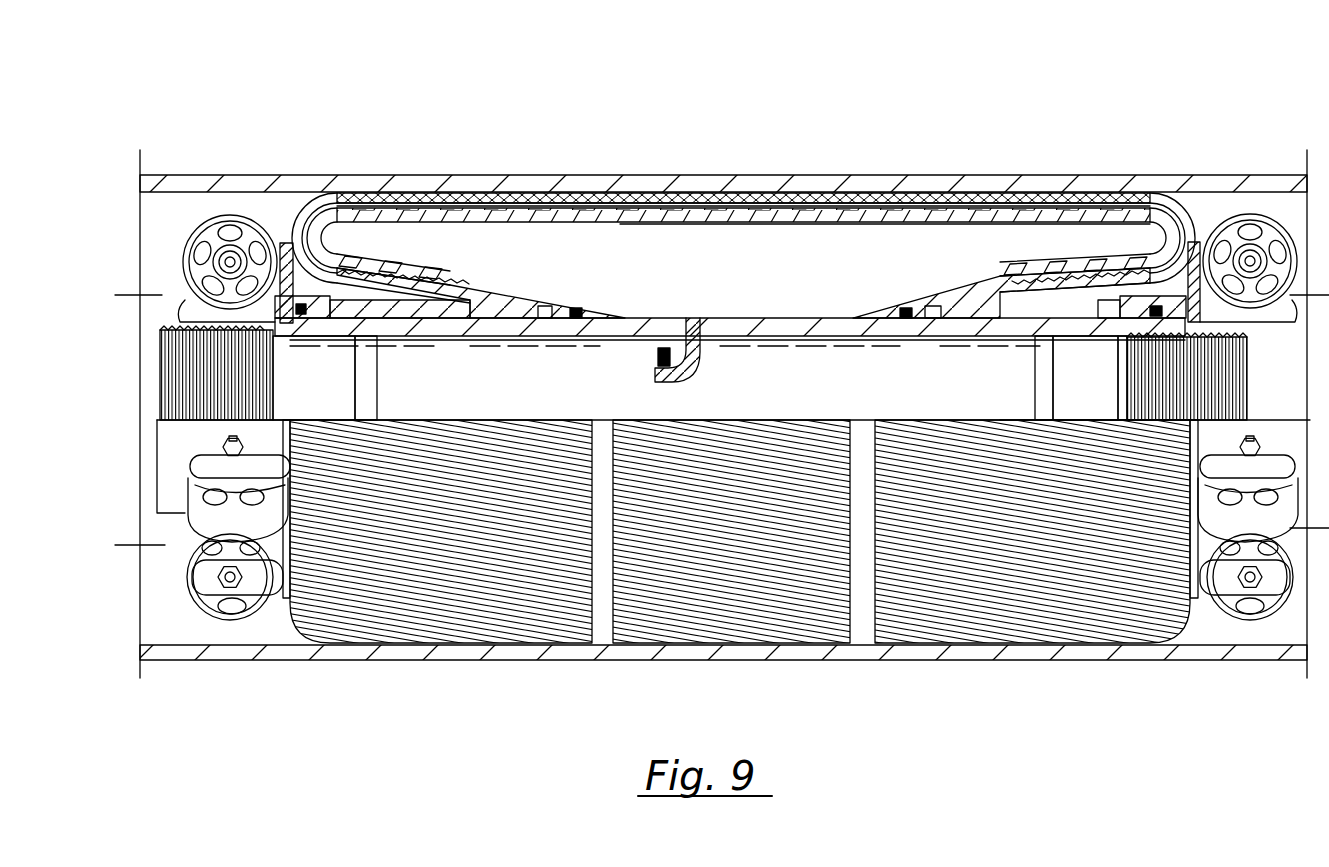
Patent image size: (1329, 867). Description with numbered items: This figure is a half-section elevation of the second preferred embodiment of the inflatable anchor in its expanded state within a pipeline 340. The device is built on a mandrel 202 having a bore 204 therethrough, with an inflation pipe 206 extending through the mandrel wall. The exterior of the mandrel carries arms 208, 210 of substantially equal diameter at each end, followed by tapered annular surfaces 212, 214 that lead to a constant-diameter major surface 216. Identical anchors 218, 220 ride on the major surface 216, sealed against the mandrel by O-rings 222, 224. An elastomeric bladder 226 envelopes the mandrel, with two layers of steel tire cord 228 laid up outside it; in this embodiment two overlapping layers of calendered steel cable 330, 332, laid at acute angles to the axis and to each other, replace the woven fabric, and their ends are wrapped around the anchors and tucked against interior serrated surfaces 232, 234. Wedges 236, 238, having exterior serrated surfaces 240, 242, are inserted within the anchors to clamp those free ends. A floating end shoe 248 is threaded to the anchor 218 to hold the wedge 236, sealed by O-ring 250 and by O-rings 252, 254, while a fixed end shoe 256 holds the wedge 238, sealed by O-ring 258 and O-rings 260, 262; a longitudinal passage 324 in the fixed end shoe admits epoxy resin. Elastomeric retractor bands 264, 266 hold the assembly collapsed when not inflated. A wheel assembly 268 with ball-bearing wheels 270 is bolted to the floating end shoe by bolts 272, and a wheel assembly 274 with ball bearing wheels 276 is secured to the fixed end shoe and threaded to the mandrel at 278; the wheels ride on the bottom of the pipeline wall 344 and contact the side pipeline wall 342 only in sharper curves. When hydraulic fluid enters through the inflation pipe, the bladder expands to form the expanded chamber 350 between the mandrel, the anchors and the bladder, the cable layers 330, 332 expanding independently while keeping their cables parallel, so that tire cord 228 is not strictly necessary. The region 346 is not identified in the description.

The mandrel 202 is at (650, 326).
The bore 204 is at (1060, 398).
The inflation pipe 206 is at (705, 355).
The arm 208 is at (185, 320).
The arm 210 is at (1140, 345).
The tapered annular surface 212 is at (300, 340).
The tapered annular surface 214 is at (1105, 340).
The major surface 216 is at (770, 320).
The anchor 218 is at (500, 296).
The anchor 220 is at (990, 288).
The O-ring 222 is at (578, 308).
The O-ring 224 is at (905, 308).
The elastomeric bladder 226 is at (512, 200).
The steel tire cord 228 is at (738, 213).
The interior serrated surface 232 is at (390, 254).
The interior serrated surface 234 is at (1088, 276).
The wedge 236 is at (380, 340).
The wedge 238 is at (1120, 268).
The exterior serrated surface 240 is at (425, 272).
The exterior serrated surface 242 is at (1104, 280).
The floating end shoe 248 is at (440, 314).
The O-ring 250 is at (548, 306).
The O-ring 252 is at (340, 340).
The O-ring 254 is at (395, 320).
The fixed end shoe 256 is at (1194, 258).
The O-ring 258 is at (935, 306).
The O-ring 260 is at (1045, 324).
The O-ring 262 is at (1178, 242).
The retractor band 264 is at (600, 197).
The retractor band 266 is at (855, 200).
The wheel assembly 268 is at (185, 265).
The ball-bearing wheels 270 is at (190, 495).
The bolts 272 is at (300, 192).
The wheel assembly 274 is at (1240, 600).
The ball bearing wheels 276 is at (1270, 600).
The threaded connection 278 is at (1250, 445).
The longitudinal passage 324 is at (1262, 192).
The calendered steel cable layer 330 is at (548, 210).
The calendered steel cable layer 332 is at (648, 210).
The pipeline 340 is at (290, 660).
The side pipeline wall 342 is at (325, 195).
The bottom of pipeline wall 344 is at (372, 193).
The right belt lower run 346 is at (1060, 272).
The expanded chamber 350 is at (697, 260).